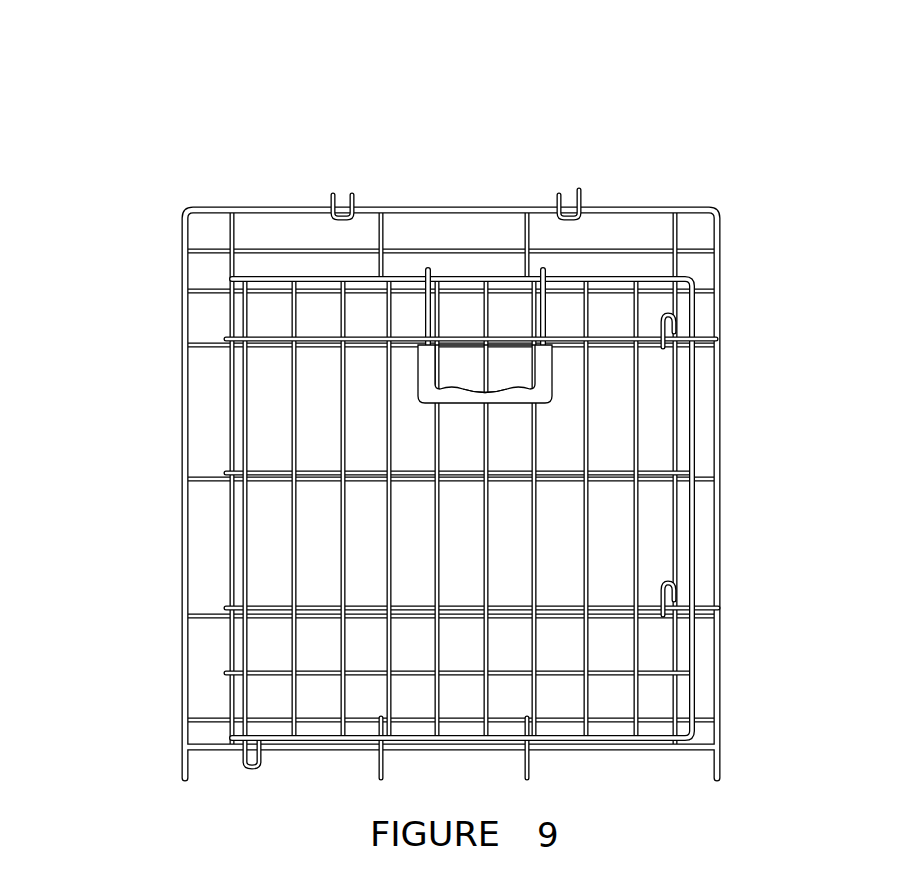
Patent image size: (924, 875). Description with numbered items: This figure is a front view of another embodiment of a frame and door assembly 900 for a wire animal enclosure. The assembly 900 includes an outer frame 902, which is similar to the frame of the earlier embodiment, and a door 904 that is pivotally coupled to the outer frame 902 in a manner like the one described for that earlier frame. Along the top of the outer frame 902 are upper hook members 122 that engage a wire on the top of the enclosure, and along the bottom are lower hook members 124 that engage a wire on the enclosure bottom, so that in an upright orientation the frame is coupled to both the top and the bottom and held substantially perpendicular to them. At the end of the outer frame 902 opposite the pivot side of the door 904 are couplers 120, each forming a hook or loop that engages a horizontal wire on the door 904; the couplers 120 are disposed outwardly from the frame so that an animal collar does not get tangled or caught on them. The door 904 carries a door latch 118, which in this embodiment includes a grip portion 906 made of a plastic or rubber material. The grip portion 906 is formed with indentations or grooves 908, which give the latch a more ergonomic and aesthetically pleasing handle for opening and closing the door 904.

The frame and door assembly 900 is at (431, 437).
The outer frame 902 is at (185, 427).
The door 904 is at (605, 475).
The grip portion 906 is at (505, 398).
The indentations or grooves 908 is at (503, 378).
The door latch 118 is at (545, 307).
The couplers 120 is at (672, 316).
The upper hook members 122 is at (353, 195).
The lower hook members 124 is at (530, 775).